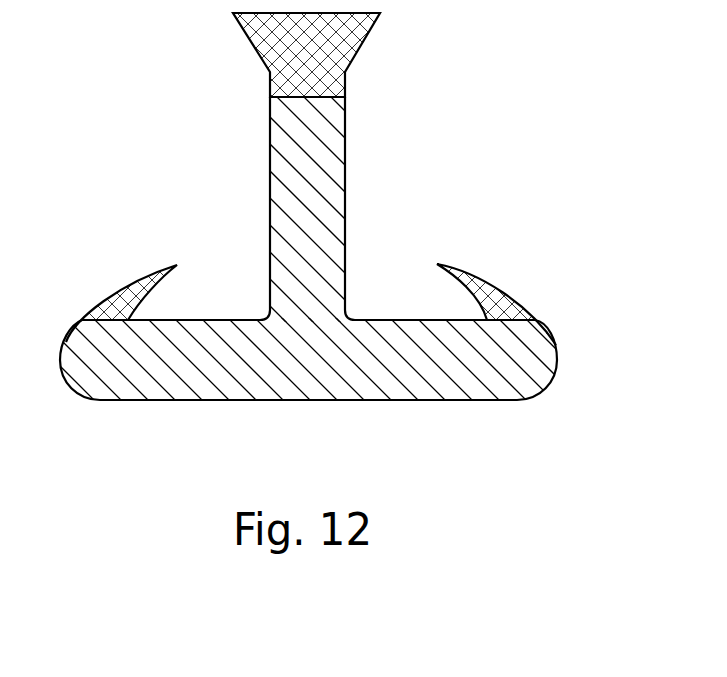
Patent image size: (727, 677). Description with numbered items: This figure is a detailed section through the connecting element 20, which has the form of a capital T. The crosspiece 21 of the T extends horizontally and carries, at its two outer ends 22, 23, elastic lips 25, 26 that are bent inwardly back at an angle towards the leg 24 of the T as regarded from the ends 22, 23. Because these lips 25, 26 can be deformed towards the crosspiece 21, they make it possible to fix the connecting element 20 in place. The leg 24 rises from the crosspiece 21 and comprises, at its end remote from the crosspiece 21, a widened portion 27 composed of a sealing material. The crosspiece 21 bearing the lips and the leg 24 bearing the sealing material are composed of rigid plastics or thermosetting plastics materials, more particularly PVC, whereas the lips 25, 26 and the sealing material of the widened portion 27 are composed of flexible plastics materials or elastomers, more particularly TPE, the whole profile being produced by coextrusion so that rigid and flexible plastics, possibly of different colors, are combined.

The connecting element 20 is at (363, 338).
The crosspiece 21 is at (323, 385).
The outer end 22 is at (527, 382).
The outer end 23 is at (137, 385).
The leg 24 is at (312, 118).
The elastic lip 25 is at (465, 281).
The elastic lip 26 is at (144, 282).
The widened portion 27 is at (333, 50).